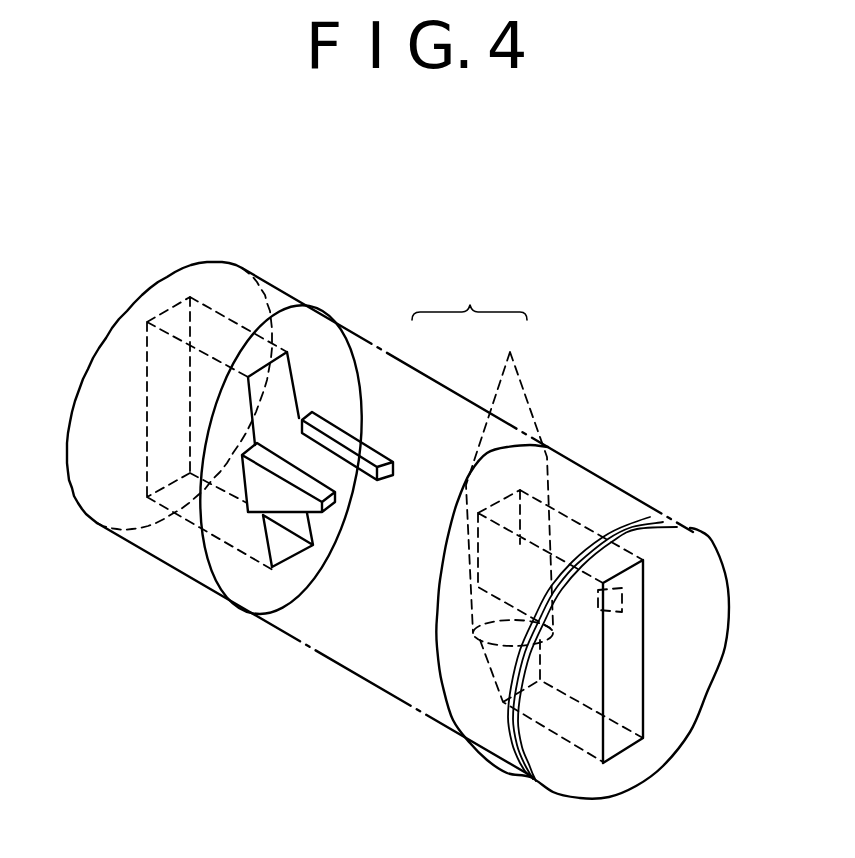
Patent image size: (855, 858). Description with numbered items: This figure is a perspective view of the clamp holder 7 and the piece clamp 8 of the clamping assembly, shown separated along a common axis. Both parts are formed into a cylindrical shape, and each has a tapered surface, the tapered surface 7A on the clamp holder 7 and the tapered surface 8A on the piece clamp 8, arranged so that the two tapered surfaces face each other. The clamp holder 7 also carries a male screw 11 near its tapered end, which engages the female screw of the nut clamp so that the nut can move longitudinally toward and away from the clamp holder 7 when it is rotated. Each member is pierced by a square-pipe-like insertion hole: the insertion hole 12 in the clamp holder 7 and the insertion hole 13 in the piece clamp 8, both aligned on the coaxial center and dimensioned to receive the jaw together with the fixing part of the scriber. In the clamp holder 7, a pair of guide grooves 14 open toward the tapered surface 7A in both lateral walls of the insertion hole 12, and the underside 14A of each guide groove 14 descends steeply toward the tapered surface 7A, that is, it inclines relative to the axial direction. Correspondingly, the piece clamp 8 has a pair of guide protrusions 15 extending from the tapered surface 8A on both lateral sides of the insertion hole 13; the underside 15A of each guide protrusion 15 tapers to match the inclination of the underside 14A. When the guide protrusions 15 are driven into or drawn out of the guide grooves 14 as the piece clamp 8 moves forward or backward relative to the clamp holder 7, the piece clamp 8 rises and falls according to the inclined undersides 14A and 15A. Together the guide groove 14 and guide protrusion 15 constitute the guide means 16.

The clamp holder 7 is at (588, 482).
The tapered surface 7A is at (437, 598).
The piece clamp 8 is at (205, 278).
The tapered surface 8A is at (318, 333).
The male screw 11 is at (650, 517).
The insertion hole 12 is at (630, 671).
The insertion hole 13 is at (285, 376).
The guide groove 14 is at (509, 481).
The underside of guide groove 14A is at (473, 645).
The guide protrusion 15 is at (302, 480).
The underside of guide protrusion 15A is at (352, 478).
The guide means 16 is at (469, 298).